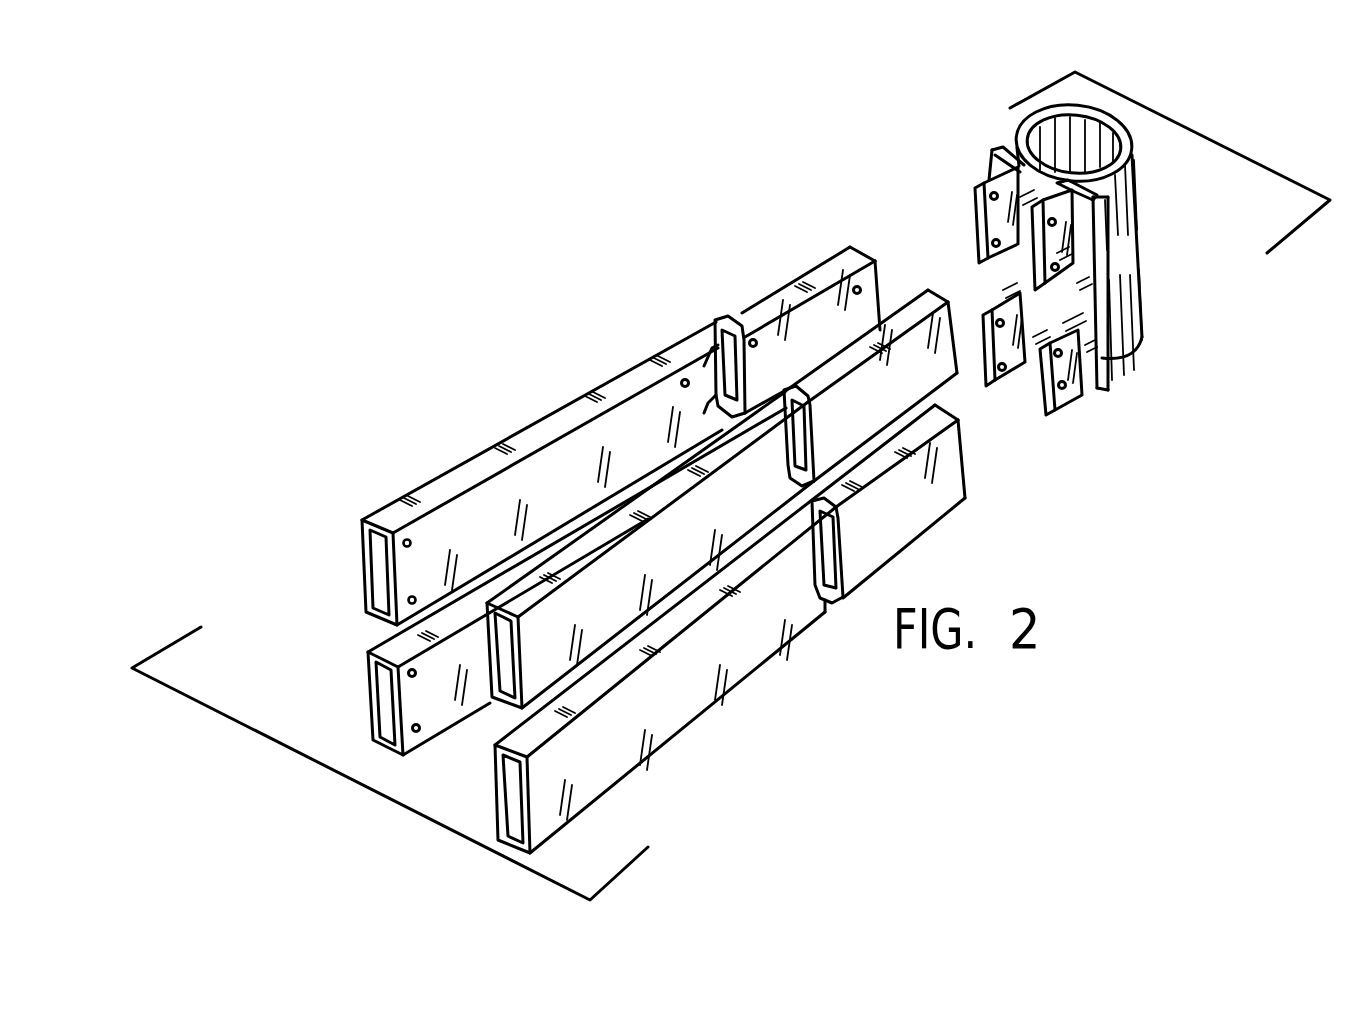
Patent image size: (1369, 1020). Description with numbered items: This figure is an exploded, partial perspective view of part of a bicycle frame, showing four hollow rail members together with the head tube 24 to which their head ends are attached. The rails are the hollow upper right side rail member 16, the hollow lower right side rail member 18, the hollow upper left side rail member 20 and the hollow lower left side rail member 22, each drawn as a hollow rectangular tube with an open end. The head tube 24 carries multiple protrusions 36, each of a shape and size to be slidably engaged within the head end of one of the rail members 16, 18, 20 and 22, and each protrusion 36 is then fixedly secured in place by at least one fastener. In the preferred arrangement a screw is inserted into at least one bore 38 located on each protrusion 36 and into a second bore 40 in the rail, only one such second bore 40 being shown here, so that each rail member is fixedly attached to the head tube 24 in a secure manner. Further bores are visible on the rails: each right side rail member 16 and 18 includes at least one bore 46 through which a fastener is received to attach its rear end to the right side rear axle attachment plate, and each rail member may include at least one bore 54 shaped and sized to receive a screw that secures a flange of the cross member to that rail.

The hollow upper right side rail member 16 is at (497, 703).
The hollow lower right side rail member 18 is at (592, 795).
The hollow upper left side rail member 20 is at (430, 490).
The hollow lower left side rail member 22 is at (372, 690).
The head tube 24 is at (1132, 225).
The protrusion 36 is at (995, 258).
The bore 38 is at (980, 242).
The second bore 40 is at (855, 290).
The bore 46 is at (403, 545).
The bore 54 is at (728, 318).